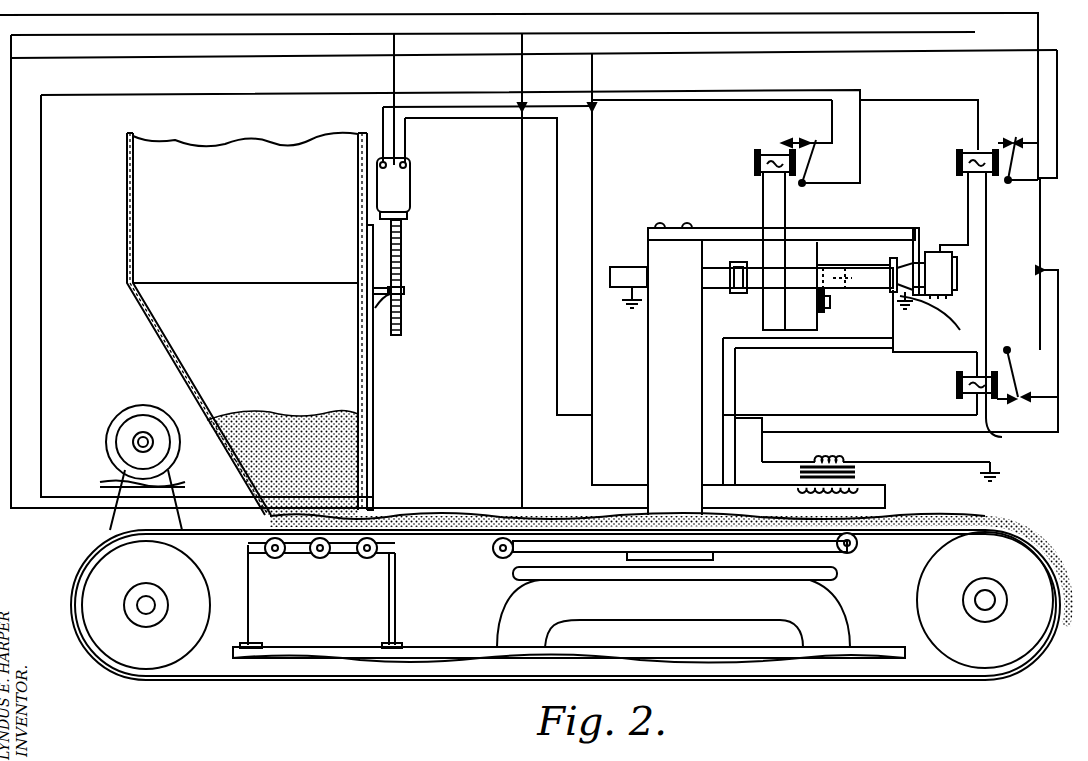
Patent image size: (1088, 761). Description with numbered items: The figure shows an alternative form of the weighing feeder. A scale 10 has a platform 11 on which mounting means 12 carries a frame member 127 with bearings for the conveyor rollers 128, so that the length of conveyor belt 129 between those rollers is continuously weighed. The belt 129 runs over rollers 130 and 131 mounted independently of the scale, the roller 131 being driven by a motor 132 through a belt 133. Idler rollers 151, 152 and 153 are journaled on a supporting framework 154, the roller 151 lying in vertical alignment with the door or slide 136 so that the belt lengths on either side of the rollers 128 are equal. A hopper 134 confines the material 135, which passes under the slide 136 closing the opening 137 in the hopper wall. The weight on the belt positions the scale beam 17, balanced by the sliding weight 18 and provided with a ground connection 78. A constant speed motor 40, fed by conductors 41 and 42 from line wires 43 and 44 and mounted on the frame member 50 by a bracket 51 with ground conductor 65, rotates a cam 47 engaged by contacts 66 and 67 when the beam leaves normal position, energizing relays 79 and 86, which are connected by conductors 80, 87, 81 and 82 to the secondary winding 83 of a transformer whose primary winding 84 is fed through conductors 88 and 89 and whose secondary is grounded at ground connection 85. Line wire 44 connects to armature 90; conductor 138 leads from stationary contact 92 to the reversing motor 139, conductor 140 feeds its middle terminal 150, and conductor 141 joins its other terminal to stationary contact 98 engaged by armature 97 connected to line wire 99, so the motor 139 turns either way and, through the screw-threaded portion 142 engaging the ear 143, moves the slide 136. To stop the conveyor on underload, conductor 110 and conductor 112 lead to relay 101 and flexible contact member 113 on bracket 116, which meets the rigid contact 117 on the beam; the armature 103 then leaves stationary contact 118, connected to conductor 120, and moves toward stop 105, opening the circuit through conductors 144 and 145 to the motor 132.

The scale 10 is at (668, 288).
The platform 11 is at (840, 577).
The mounting means 12 is at (672, 562).
The scale beam 17 is at (708, 265).
The sliding weight 18 is at (742, 262).
The constant speed electric motor 40 is at (955, 265).
The conductor 41 is at (522, 398).
The conductor 42 is at (592, 70).
The line wire 43 is at (486, 34).
The line wire 44 is at (647, 55).
The cam 47 is at (900, 303).
The horizontal frame member 50 is at (870, 228).
The bracket 51 is at (925, 245).
The conductor 65 is at (905, 352).
The contact member 66 is at (890, 262).
The contact member 67 is at (939, 318).
The ground connection 78 is at (628, 312).
The relay 79 is at (960, 152).
The conductor 80 is at (1040, 232).
The conductor 81 is at (1058, 408).
The conductor 82 is at (770, 462).
The secondary winding 83 is at (845, 462).
The primary winding 84 is at (850, 492).
The ground connection 85 is at (968, 462).
The relay 86 is at (965, 398).
The conductor 87 is at (988, 302).
The conductor 88 is at (776, 484).
The conductor 89 is at (776, 508).
The armature 90 is at (1013, 185).
The stationary contact member 92 is at (1005, 150).
The armature 97 is at (1008, 352).
The stationary contact 98 is at (992, 432).
The line wire 99 is at (982, 14).
The relay 101 is at (755, 160).
The armature 103 is at (806, 188).
The stop 105 is at (792, 140).
The conductor 110 is at (763, 300).
The conductor 112 is at (773, 350).
The flexible contact member 113 is at (820, 320).
The bracket 116 is at (817, 246).
The rigid contact 117 is at (832, 302).
The stationary contact 118 is at (826, 148).
The conductor 120 is at (672, 102).
The frame member 127 is at (767, 553).
The conveyor rollers 128 is at (497, 560).
The conveyor belt 129 is at (437, 508).
The roller 130 is at (960, 645).
The roller 131 is at (180, 665).
The motor 132 is at (140, 422).
The belt 133 is at (185, 515).
The hopper 134 is at (195, 168).
The material 135 is at (278, 412).
The door or slide 136 is at (367, 410).
The opening 137 is at (367, 350).
The conductor 138 is at (978, 104).
The reversing motor 139 is at (397, 186).
The conductor 140 is at (394, 80).
The conductor 141 is at (560, 418).
The screw-threaded portion 142 is at (401, 272).
The ear 143 is at (373, 308).
The conductor 144 is at (41, 305).
The conductor 145 is at (27, 250).
The middle terminal 150 is at (408, 165).
The idler roller 151 is at (362, 560).
The idler roller 152 is at (320, 560).
The idler roller 153 is at (275, 560).
The supporting framework 154 is at (395, 596).